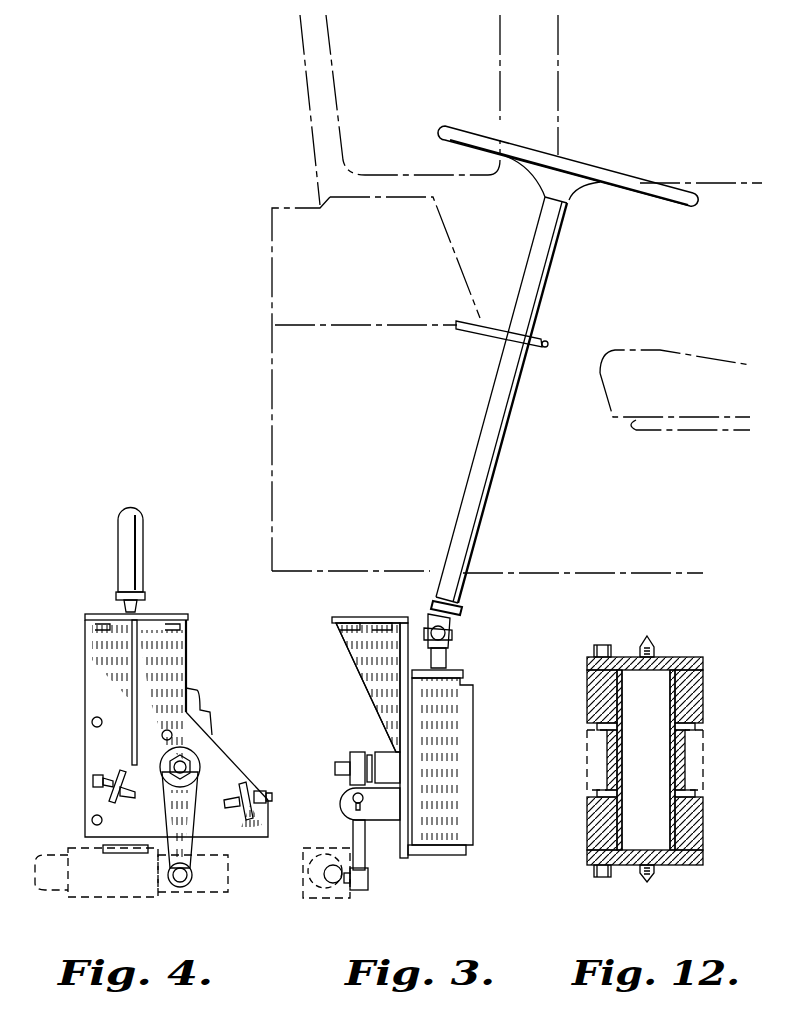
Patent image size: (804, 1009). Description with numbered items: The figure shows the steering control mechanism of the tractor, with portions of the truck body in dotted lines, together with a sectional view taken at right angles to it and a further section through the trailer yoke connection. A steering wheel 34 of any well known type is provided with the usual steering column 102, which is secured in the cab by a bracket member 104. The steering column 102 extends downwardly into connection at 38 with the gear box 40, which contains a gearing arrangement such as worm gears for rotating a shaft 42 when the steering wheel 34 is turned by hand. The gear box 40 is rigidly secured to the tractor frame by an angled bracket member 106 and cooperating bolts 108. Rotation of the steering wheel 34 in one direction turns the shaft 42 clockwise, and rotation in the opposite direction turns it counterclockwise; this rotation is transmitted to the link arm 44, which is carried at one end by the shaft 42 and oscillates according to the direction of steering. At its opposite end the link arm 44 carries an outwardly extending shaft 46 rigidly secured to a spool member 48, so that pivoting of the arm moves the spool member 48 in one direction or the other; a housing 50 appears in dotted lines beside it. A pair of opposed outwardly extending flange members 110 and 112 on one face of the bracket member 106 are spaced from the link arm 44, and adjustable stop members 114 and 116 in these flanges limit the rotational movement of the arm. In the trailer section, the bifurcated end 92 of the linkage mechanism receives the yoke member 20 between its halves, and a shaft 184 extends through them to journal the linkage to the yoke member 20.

In FIG. 3, the steering wheel 34 is at (588, 172).
In FIG. 3, the steering column 102 is at (503, 458).
In FIG. 3, the bracket member 104 is at (538, 341).
In FIG. 3, the connection 38 is at (449, 633).
In FIG. 3, the angled bracket member 106 is at (377, 617).
In FIG. 4, the angled bracket member 106 is at (186, 658).
In FIG. 3, the bolts 108 is at (340, 632).
In FIG. 3, the gear box 40 is at (463, 716).
In FIG. 3, the shaft 42 is at (370, 757).
In FIG. 3, the flange member 110 is at (378, 818).
In FIG. 4, the flange member 110 is at (247, 796).
In FIG. 3, the shaft 46 is at (350, 890).
In FIG. 3, the spool member 48 is at (320, 854).
In FIG. 4, the spool member 48 is at (215, 876).
In FIG. 3, the housing (phantom) 50 is at (312, 895).
In FIG. 4, the housing (phantom) 50 is at (134, 885).
In FIG. 4, the link arm 44 is at (185, 800).
In FIG. 4, the flange member 112 is at (112, 790).
In FIG. 4, the adjustable stop member 116 is at (93, 780).
In FIG. 4, the adjustable stop member 114 is at (268, 798).
In FIG. 12, the shaft 184 is at (657, 692).
In FIG. 12, the end 92 is at (704, 700).
In FIG. 12, the yoke member 20 is at (695, 768).